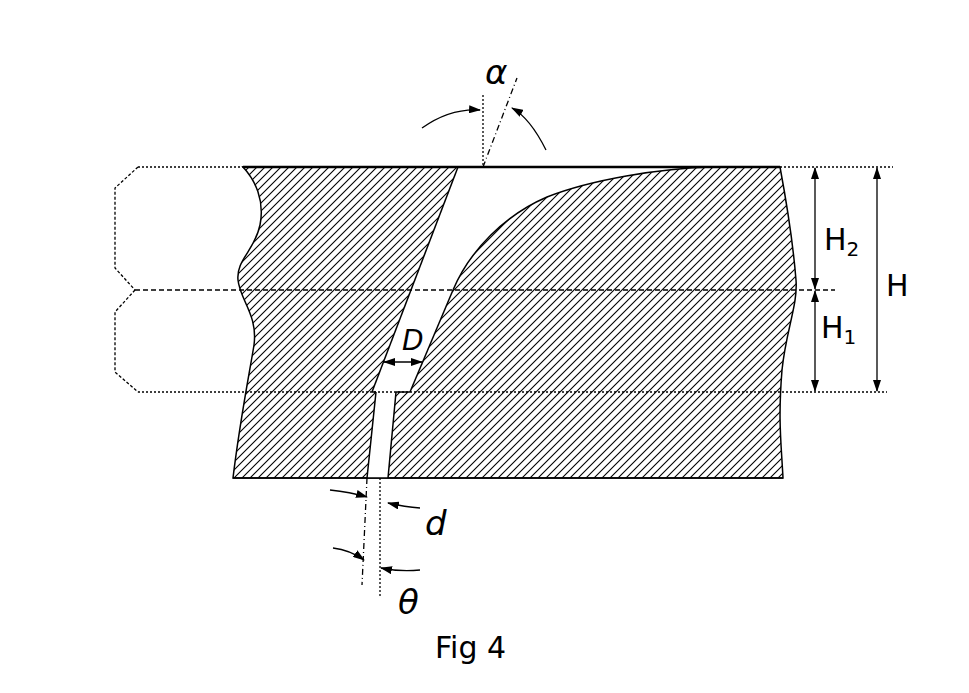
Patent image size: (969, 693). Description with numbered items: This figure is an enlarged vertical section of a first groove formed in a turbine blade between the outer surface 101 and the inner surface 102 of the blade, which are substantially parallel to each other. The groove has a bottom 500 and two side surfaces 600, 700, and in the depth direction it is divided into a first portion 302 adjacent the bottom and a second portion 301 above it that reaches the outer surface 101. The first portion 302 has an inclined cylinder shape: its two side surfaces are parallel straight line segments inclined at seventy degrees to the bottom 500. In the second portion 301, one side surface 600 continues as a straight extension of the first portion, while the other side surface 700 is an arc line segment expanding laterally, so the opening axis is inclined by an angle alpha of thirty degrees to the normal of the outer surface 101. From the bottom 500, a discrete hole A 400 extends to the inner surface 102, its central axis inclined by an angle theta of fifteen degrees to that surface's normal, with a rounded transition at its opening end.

The outer surface of the turbine blade 101 is at (745, 167).
The inner surface of the turbine blade 102 is at (603, 478).
The second portion of the groove 301 is at (85, 228).
The first portion of the groove 302 is at (86, 341).
The discrete hole A 400 is at (373, 440).
The bottom of the first groove 500 is at (377, 396).
The side surface of the first groove 600 is at (427, 247).
The side surface of the first groove 700 is at (507, 222).